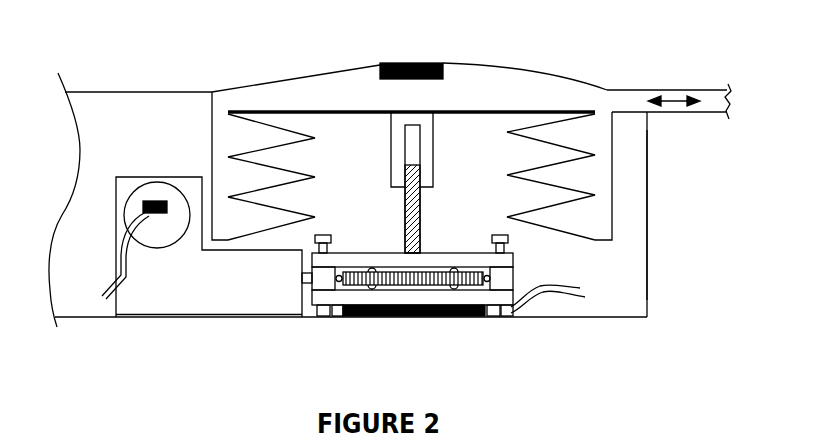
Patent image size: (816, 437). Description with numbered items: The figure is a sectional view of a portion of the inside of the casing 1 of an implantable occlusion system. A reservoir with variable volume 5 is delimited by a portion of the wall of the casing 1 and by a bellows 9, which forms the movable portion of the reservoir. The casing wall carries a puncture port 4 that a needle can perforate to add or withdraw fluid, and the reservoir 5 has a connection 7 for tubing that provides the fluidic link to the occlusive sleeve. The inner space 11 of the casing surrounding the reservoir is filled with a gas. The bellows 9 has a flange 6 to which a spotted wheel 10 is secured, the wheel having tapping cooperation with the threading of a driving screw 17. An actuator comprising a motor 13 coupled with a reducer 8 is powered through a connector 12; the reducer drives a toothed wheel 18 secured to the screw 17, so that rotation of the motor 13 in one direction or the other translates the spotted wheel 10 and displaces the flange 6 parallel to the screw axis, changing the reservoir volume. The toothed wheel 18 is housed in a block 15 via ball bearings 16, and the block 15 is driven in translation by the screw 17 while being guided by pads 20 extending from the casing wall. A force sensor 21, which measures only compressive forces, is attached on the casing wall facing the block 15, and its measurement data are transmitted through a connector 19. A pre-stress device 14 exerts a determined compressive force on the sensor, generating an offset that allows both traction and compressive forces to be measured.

The casing 1 is at (143, 92).
The puncture port 4 is at (411, 63).
The reservoir with variable volume 5 is at (320, 84).
The flange 6 is at (458, 111).
The connection for tubing 7 is at (678, 92).
The reducer 8 is at (159, 177).
The bellows 9 is at (311, 178).
The spotted wheel 10 is at (436, 167).
The inner space 11 is at (648, 219).
The connector 12 is at (108, 282).
The motor 13 is at (152, 248).
The pre-stress device 14 is at (324, 234).
The block 15 is at (352, 252).
The ball bearings 16 is at (376, 271).
The driving screw 17 is at (422, 236).
The toothed wheel 18 is at (460, 267).
The connector 19 is at (548, 283).
The pads 20 is at (314, 317).
The force sensor 21 is at (388, 318).